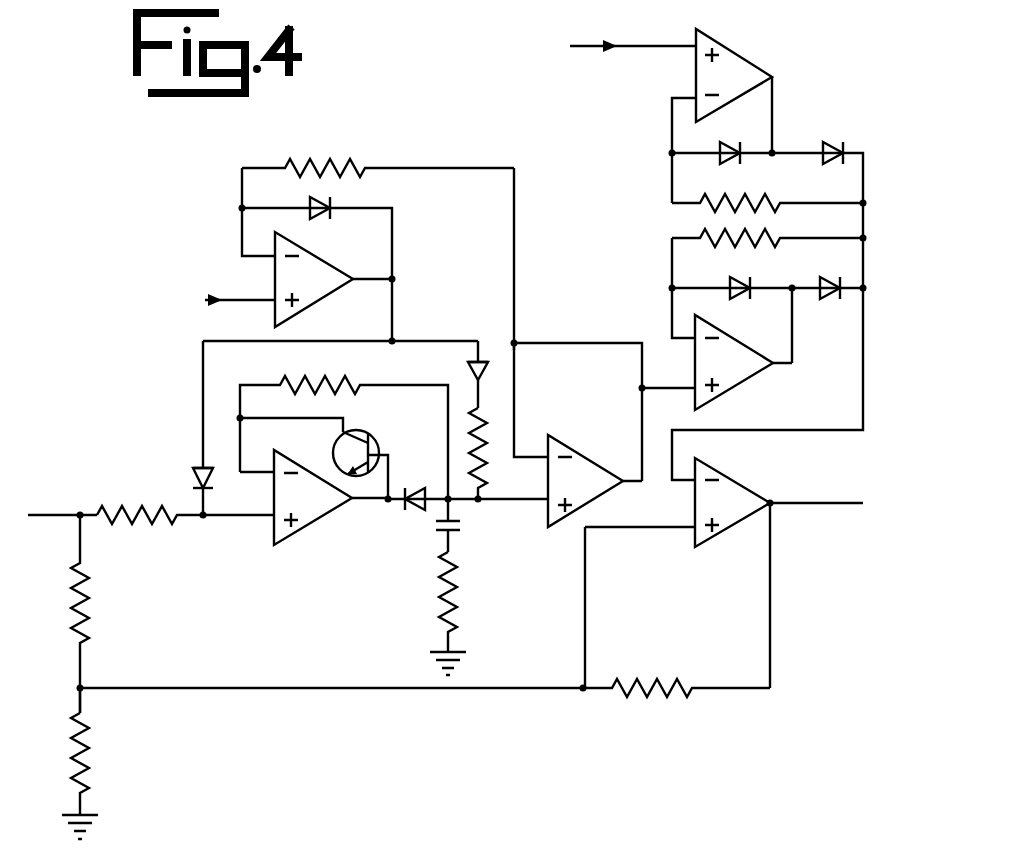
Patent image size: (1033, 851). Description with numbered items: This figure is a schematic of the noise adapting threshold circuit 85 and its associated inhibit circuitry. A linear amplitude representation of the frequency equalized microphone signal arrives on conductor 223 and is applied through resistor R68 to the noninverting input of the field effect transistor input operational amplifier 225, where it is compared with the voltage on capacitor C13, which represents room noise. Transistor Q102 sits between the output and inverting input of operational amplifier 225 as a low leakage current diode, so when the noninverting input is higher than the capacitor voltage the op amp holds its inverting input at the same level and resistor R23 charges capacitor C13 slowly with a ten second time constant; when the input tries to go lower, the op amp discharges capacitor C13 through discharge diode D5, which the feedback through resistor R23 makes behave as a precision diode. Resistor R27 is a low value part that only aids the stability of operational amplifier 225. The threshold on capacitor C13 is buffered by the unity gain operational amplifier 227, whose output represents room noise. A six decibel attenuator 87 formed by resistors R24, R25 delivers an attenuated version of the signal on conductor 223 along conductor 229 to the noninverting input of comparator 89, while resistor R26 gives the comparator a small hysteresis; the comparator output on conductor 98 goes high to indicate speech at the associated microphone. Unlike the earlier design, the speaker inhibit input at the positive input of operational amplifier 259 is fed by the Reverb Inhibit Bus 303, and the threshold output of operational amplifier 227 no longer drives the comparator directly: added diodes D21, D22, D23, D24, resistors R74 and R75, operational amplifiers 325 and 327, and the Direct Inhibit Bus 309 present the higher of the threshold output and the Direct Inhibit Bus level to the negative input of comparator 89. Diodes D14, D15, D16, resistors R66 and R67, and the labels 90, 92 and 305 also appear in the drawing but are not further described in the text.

The conductor 223 is at (60, 492).
The resistor R68 is at (185, 499).
The resistor R24 is at (112, 614).
The resistor R25 is at (107, 776).
The 6 dB attenuator 87 is at (60, 674).
The conductor 229 is at (272, 690).
The diode D16 is at (181, 428).
The diode D15 is at (454, 374).
The resistor R66 is at (503, 459).
The resistor R23 is at (344, 428).
The transistor Q102 is at (382, 452).
The operational amplifier 225 is at (315, 515).
The discharge diode D5 is at (433, 485).
The capacitor C13 is at (479, 525).
The resistor R27 is at (476, 613).
The resistor R67 is at (378, 153).
The diode D14 is at (324, 260).
The operational amplifier 259 is at (316, 289).
The Reverb Inhibit Bus 303 is at (240, 292).
The noise adapting threshold circuit 85 is at (538, 278).
The operational amplifier 227 is at (582, 458).
The Direct Inhibit Bus 309 is at (590, 47).
The comparator circuit 90 is at (747, 23).
The operational amplifier 325 is at (745, 62).
The diode D21 is at (722, 134).
The diode D22 is at (818, 154).
The resistor R74 is at (767, 189).
The resistor R75 is at (767, 283).
The diode D23 is at (732, 320).
The diode D24 is at (827, 304).
The operational amplifier 327 is at (740, 373).
The signal line 92 is at (870, 407).
The comparator 89 is at (738, 497).
The conductor 98 is at (830, 503).
The resistor R26 is at (676, 672).
The circuit 305 is at (538, 597).